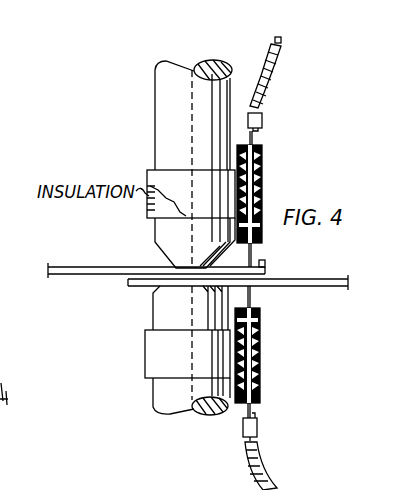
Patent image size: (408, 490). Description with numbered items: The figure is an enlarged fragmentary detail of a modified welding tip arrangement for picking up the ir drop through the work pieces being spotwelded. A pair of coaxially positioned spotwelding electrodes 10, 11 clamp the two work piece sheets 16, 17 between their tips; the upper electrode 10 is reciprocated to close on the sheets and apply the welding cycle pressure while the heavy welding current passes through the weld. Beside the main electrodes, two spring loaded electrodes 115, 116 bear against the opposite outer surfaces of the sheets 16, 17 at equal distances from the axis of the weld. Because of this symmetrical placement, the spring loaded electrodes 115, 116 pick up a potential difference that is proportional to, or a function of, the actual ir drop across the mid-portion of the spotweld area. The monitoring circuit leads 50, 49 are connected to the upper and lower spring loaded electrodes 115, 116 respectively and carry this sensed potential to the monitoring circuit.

The spotwelding electrode 10 is at (153, 153).
The spotwelding electrode 11 is at (156, 402).
The work piece sheet 16 is at (100, 267).
The work piece sheet 17 is at (320, 287).
The spring loaded electrode 115 is at (258, 250).
The spring loaded electrode 116 is at (252, 291).
The monitoring circuit lead 50 is at (283, 42).
The monitoring circuit lead 49 is at (276, 487).